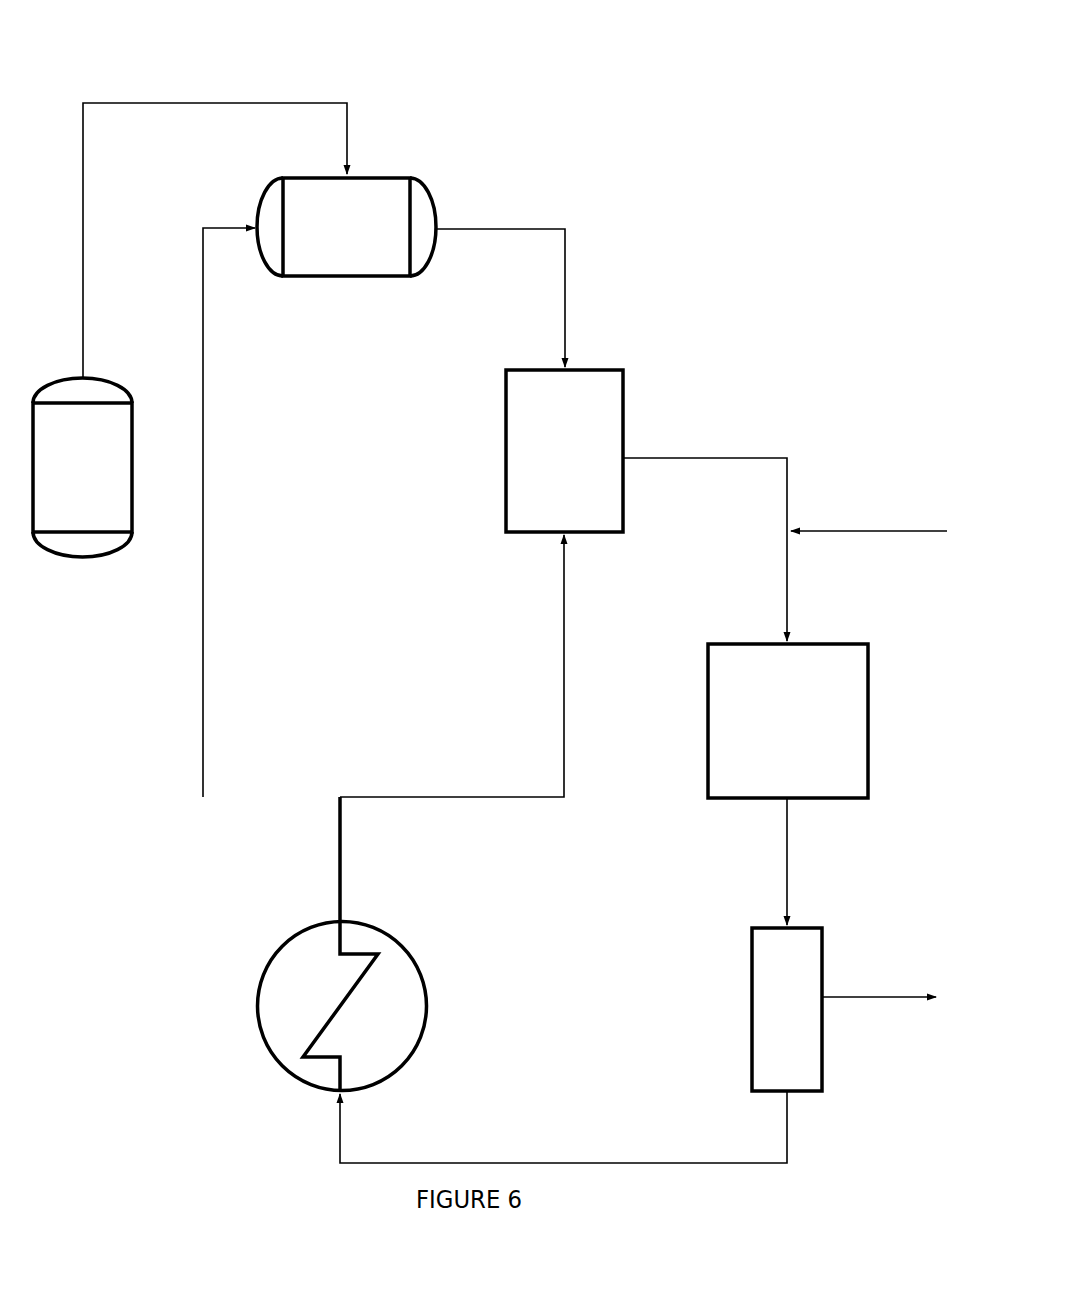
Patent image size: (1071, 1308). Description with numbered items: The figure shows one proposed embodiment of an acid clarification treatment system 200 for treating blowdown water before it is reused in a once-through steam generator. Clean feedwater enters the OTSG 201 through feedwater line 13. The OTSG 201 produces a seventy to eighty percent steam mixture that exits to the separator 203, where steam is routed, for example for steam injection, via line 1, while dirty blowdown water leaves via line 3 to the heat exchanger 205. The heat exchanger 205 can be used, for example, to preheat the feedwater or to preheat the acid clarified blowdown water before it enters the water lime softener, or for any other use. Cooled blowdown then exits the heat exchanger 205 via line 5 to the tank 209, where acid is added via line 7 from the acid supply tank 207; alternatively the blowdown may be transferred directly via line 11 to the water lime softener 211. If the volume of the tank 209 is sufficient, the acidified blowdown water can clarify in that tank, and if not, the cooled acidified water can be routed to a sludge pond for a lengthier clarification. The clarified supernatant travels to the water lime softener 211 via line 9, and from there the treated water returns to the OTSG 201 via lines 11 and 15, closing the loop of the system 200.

The acid clarification treatment system 200 is at (82, 31).
The OTSG 201 is at (788, 721).
The separator 203 is at (787, 944).
The heat exchanger 205 is at (370, 944).
The acid supply tank 207 is at (82, 467).
The tank 209 is at (346, 227).
The water lime softener 211 is at (564, 451).
The line 1 is at (879, 979).
The line 3 is at (563, 1127).
The line 5 is at (229, 512).
The line 7 is at (215, 225).
The line 9 is at (512, 282).
The line 11 is at (452, 666).
The feedwater line 13 is at (869, 511).
The line 15 is at (705, 533).